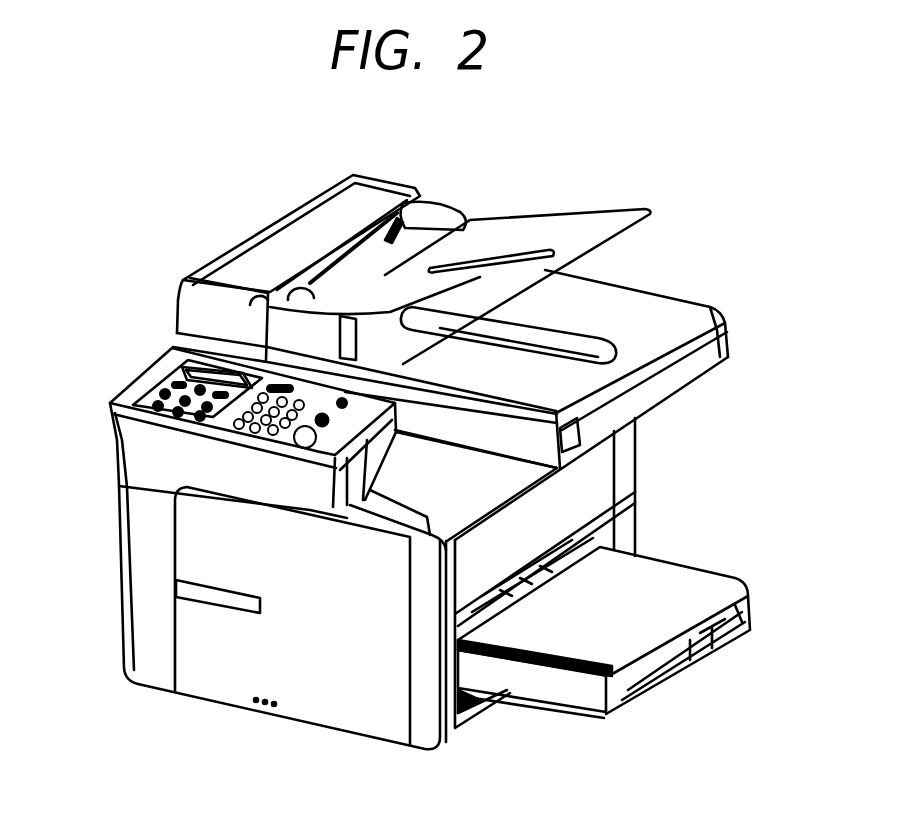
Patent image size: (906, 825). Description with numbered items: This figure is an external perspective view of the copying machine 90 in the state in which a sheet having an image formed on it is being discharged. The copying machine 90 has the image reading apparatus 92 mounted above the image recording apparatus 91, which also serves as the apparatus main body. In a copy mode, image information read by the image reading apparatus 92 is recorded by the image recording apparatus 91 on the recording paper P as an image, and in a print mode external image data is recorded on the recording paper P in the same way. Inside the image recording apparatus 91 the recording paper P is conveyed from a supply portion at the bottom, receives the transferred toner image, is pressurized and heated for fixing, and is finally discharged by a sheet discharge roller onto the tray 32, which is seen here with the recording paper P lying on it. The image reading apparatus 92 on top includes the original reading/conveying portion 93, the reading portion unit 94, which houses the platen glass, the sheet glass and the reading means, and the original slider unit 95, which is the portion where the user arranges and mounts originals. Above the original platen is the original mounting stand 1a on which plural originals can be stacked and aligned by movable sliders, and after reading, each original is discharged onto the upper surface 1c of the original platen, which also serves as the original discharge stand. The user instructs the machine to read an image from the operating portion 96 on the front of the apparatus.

The copying machine 90 is at (238, 218).
The image recording apparatus 91 is at (647, 463).
The image reading apparatus 92 is at (637, 252).
The original reading/conveying portion 93 is at (330, 186).
The reading portion unit 94 is at (733, 332).
The original slider unit 95 is at (455, 195).
The operating portion 96 is at (148, 388).
The original mounting stand 1a is at (550, 228).
The upper surface of the original platen 1c is at (648, 318).
The tray 32 is at (410, 514).
The recording paper P is at (431, 478).